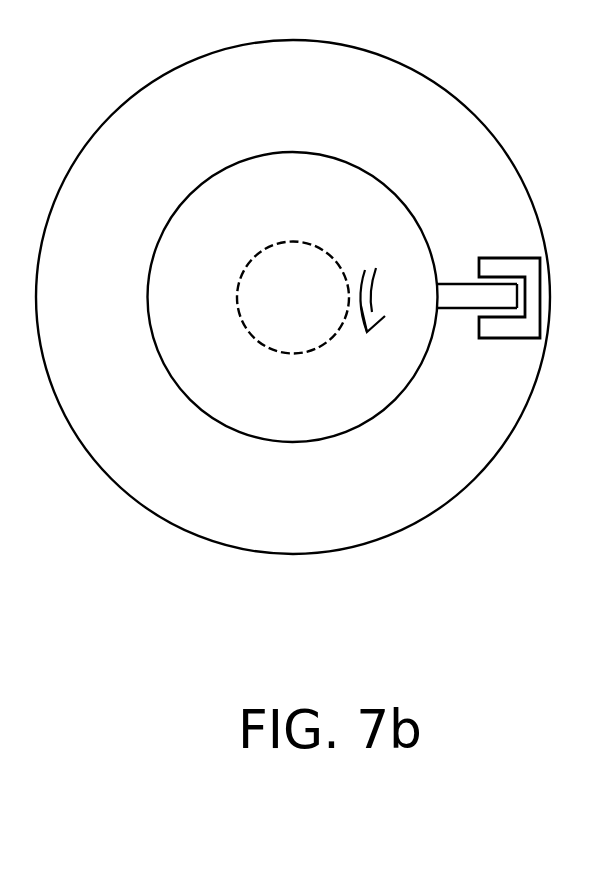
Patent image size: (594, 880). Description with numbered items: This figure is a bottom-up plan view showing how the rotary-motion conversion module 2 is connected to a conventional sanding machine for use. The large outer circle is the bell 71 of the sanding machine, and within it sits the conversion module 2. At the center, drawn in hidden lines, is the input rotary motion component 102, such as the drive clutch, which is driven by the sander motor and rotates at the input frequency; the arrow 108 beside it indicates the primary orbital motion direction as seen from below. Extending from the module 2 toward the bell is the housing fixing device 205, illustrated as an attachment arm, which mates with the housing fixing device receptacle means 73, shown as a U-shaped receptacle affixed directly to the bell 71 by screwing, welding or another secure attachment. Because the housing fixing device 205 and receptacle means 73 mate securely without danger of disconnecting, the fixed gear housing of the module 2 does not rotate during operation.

The bell 71 is at (311, 112).
The rotary-motion conversion module 2 is at (305, 218).
The input rotary motion component 102 is at (270, 309).
The primary orbital motion direction arrow 108 is at (377, 292).
The housing fixing device 205 is at (462, 295).
The housing fixing device receptacle means 73 is at (532, 270).